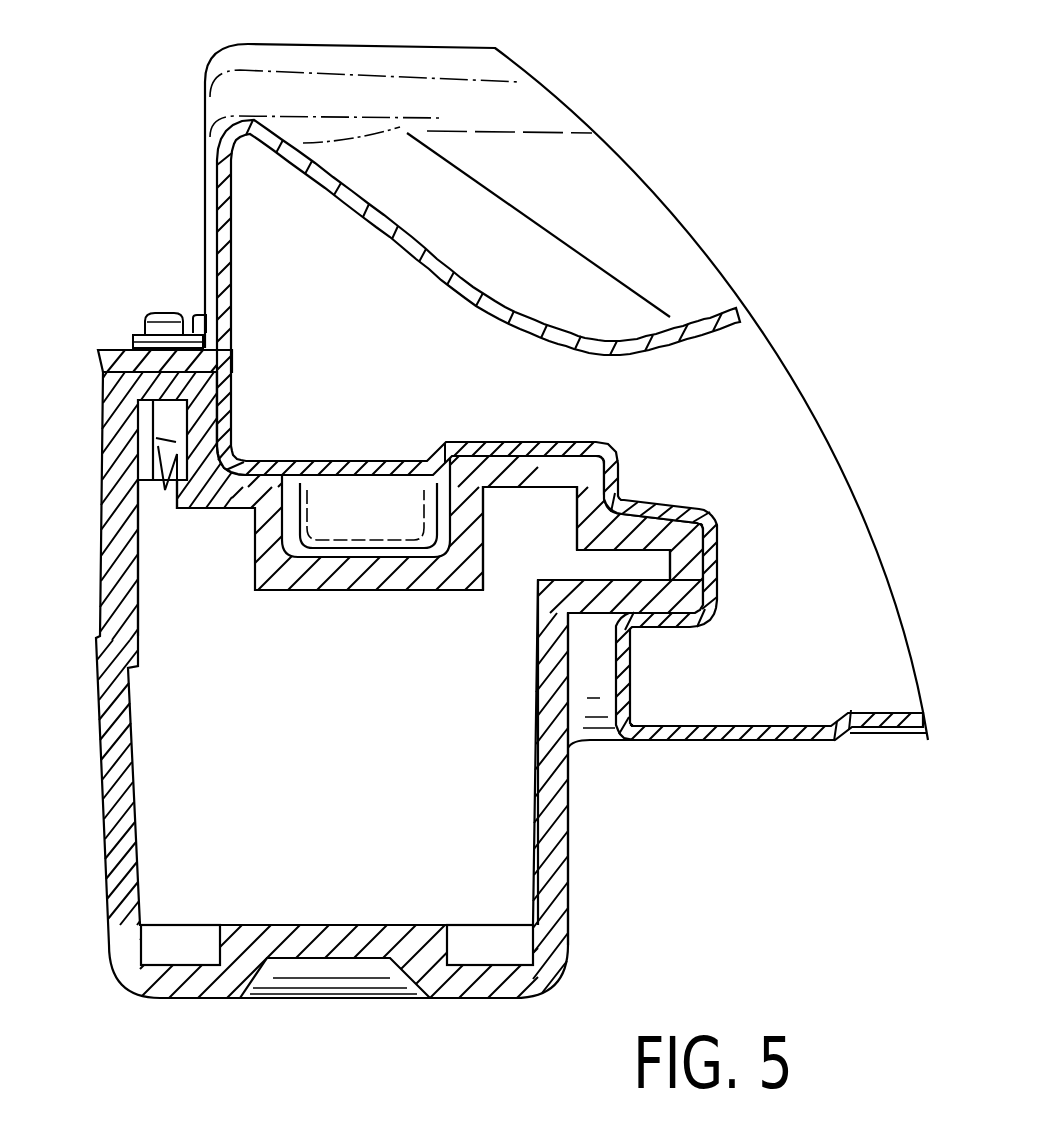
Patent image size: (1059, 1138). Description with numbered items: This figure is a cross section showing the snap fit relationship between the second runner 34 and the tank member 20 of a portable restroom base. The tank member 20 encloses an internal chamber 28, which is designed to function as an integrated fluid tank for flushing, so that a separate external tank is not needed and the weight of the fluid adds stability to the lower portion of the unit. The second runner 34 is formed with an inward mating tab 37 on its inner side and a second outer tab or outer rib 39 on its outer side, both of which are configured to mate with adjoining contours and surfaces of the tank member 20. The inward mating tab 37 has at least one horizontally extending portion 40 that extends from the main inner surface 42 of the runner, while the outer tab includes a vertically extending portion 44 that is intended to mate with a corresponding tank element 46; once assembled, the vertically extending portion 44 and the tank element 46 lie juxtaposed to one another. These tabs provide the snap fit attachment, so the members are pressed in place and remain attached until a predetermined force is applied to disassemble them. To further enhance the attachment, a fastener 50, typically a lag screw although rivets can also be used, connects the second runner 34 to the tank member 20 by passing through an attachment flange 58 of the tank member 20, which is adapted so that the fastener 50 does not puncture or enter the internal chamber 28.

The tank member 20 is at (645, 213).
The internal chamber 28 is at (325, 284).
The second runner 34 is at (205, 1004).
The inward mating tab 37 is at (548, 500).
The second outer tab 39 is at (155, 498).
The horizontally extending portion 40 is at (513, 463).
The main inner surface 42 is at (553, 860).
The vertically extending portion 44 is at (120, 433).
The tank element 46 is at (225, 397).
The fastener 50 is at (147, 313).
The attachment flange 58 is at (135, 362).